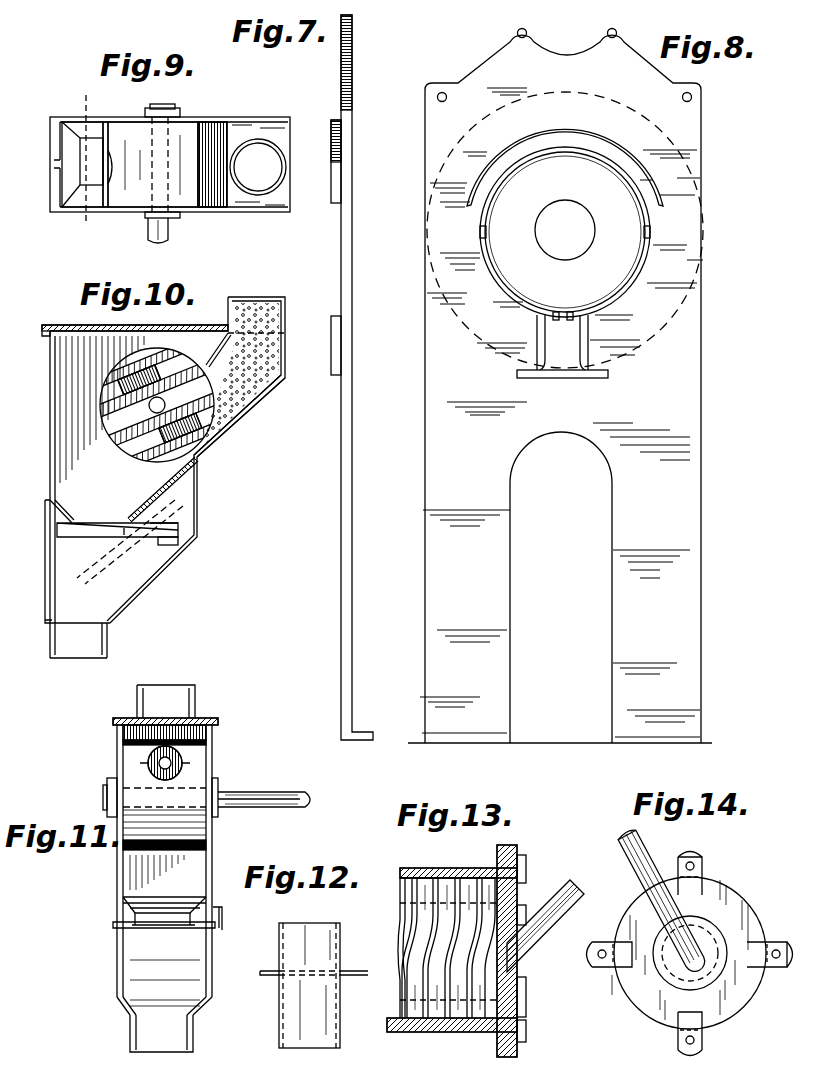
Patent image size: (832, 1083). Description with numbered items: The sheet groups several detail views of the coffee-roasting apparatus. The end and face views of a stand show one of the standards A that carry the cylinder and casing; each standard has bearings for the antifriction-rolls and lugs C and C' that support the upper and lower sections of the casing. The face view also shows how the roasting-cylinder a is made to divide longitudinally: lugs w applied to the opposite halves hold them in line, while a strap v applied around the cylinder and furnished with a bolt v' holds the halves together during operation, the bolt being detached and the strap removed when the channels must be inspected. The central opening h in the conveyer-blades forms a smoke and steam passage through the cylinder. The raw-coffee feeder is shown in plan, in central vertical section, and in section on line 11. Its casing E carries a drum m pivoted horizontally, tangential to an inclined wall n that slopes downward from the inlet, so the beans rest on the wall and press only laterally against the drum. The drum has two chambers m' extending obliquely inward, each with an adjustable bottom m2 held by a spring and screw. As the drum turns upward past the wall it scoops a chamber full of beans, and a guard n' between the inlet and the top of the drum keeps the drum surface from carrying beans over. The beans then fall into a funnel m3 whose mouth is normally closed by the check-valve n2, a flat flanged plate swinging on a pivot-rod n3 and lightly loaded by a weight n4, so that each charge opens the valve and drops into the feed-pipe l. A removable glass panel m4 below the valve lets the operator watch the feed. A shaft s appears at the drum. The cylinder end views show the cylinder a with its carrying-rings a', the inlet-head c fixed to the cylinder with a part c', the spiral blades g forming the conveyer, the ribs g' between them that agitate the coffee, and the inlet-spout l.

In FIG. 7, the standards A is at (421, 536).
In FIG. 8, the lug C is at (565, 153).
In FIG. 8, the lug C' is at (565, 230).
In FIG. 8, the strap v is at (565, 219).
In FIG. 8, the bolt v' is at (562, 321).
In FIG. 8, the lugs w is at (492, 232).
In FIG. 8, the central opening h is at (565, 230).
In FIG. 13, the central opening h is at (418, 946).
In FIG. 8, the spiral blades g is at (565, 232).
In FIG. 13, the spiral blades g is at (431, 956).
In FIG. 13, the ribs g' is at (452, 1039).
In FIG. 9, the casing E is at (208, 122).
In FIG. 10, the casing E is at (50, 372).
In FIG. 11, the casing E is at (117, 750).
In FIG. 9, the drum m is at (153, 164).
In FIG. 10, the drum m is at (156, 405).
In FIG. 11, the drum m is at (132, 872).
In FIG. 9, the chambers m' is at (67, 164).
In FIG. 10, the chambers m' is at (155, 489).
In FIG. 11, the chambers m' is at (164, 778).
In FIG. 10, the adjustable bottom m2 is at (239, 422).
In FIG. 9, the funnel m3 is at (58, 160).
In FIG. 10, the funnel m3 is at (130, 535).
In FIG. 11, the funnel m3 is at (164, 885).
In FIG. 10, the removable glass panel m4 is at (44, 561).
In FIG. 10, the inclined wall n is at (196, 460).
In FIG. 9, the guard n' is at (235, 149).
In FIG. 10, the guard n' is at (213, 350).
In FIG. 10, the check-valve n2 is at (117, 541).
In FIG. 11, the check-valve n2 is at (167, 930).
In FIG. 12, the check-valve n2 is at (309, 985).
In FIG. 10, the pivot-rod n3 is at (143, 549).
In FIG. 11, the pivot-rod n3 is at (163, 933).
In FIG. 12, the pivot-rod n3 is at (304, 957).
In FIG. 10, the weight n4 is at (160, 556).
In FIG. 9, the roller shaft s is at (170, 230).
In FIG. 11, the roller shaft s is at (260, 792).
In FIG. 9, the section line 11 is at (85, 160).
In FIG. 13, the roasting-cylinder a is at (458, 859).
In FIG. 13, the carrying-rings a' is at (447, 929).
In FIG. 13, the feed-pipe l is at (545, 920).
In FIG. 14, the feed-pipe l is at (626, 875).
In FIG. 13, the inlet-head c is at (528, 951).
In FIG. 14, the inlet-head c is at (690, 954).
In FIG. 13, the hub c' is at (540, 948).
In FIG. 14, the hub c' is at (685, 959).